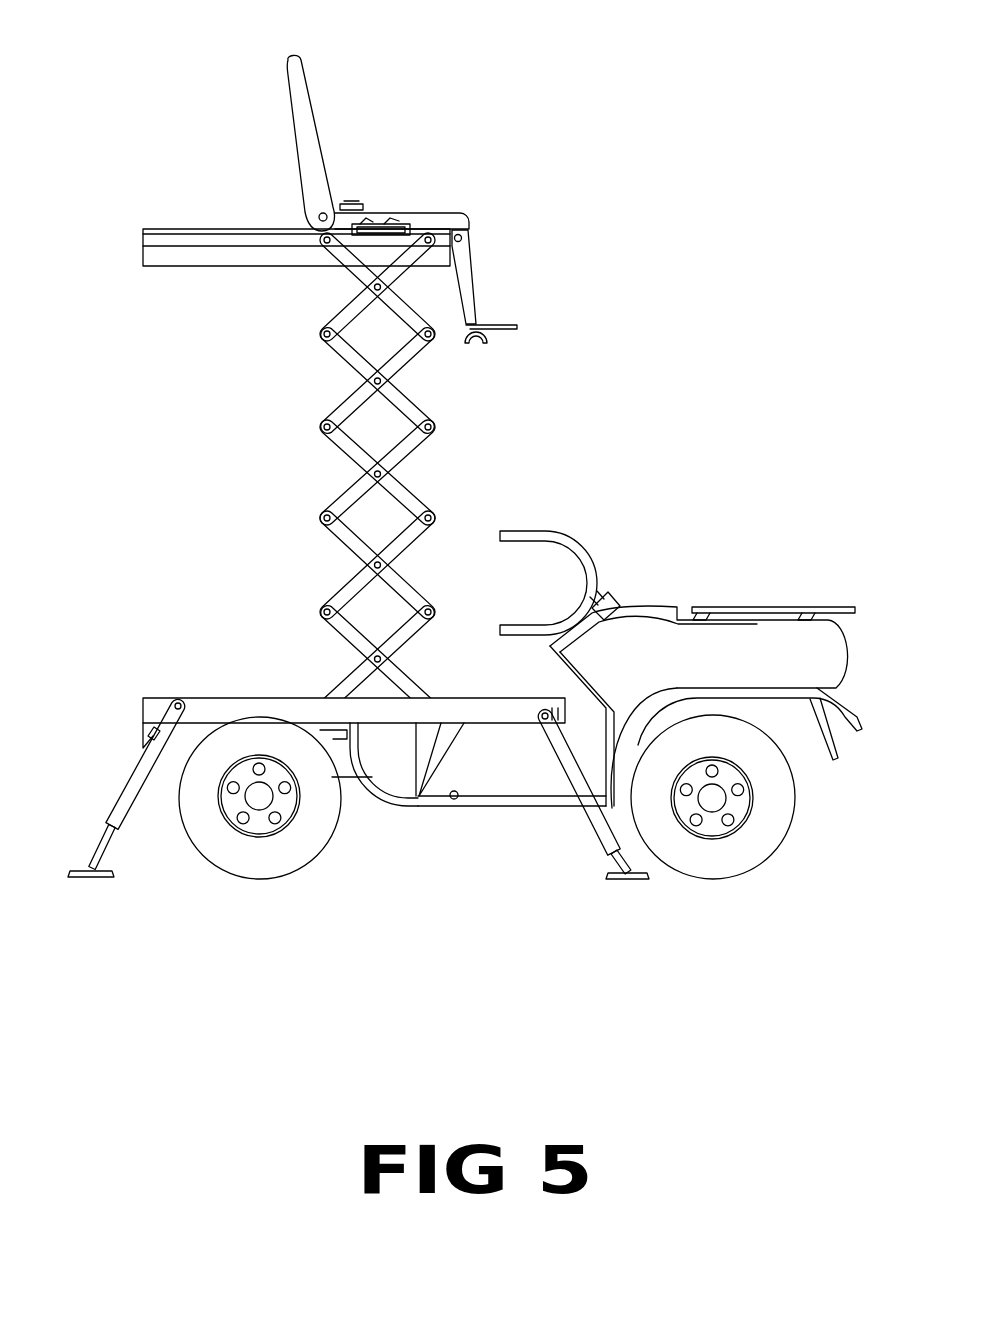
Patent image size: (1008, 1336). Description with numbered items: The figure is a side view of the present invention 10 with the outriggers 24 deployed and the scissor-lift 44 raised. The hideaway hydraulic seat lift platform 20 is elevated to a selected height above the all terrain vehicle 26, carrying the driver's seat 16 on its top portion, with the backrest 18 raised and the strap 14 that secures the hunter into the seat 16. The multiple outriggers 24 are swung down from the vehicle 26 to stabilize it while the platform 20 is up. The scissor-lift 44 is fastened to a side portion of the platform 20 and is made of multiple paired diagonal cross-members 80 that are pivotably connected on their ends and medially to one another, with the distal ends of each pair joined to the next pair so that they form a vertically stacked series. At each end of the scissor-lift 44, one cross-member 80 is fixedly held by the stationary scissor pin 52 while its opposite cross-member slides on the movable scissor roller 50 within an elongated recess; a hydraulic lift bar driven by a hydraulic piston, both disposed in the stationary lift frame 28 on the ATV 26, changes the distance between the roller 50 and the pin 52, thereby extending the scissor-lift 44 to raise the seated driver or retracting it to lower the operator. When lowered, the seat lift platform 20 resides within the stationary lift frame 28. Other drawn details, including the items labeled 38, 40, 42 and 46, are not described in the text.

The present invention 10 is at (632, 122).
The strap 14 is at (353, 203).
The seat 16 is at (437, 213).
The backrest 18 is at (307, 57).
The seat lift platform 20 is at (143, 250).
The outriggers 24 is at (125, 787).
The all terrain vehicle 26 is at (813, 648).
The stationary lift frame 28 is at (290, 697).
The leg pivot bracket 38 is at (163, 710).
The mounting bracket 40 is at (333, 738).
The seat slide mount 42 is at (385, 222).
The scissor-lift 44 is at (413, 452).
The cargo rack 46 is at (743, 607).
The scissor roller 50 is at (322, 245).
The stationary scissor pin 52 is at (447, 250).
The diagonal cross-members 80 is at (350, 367).